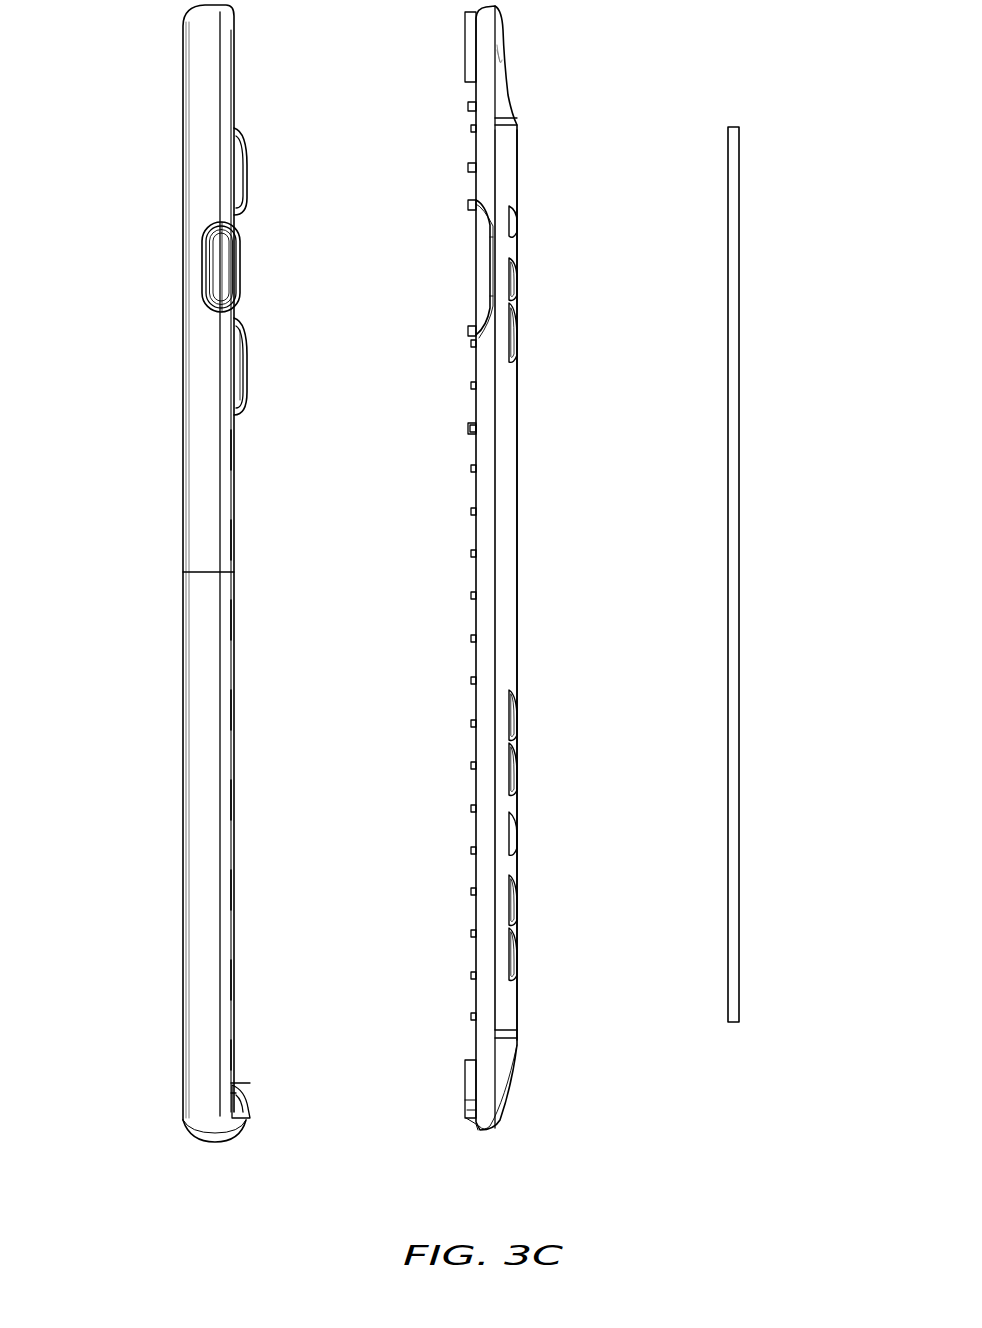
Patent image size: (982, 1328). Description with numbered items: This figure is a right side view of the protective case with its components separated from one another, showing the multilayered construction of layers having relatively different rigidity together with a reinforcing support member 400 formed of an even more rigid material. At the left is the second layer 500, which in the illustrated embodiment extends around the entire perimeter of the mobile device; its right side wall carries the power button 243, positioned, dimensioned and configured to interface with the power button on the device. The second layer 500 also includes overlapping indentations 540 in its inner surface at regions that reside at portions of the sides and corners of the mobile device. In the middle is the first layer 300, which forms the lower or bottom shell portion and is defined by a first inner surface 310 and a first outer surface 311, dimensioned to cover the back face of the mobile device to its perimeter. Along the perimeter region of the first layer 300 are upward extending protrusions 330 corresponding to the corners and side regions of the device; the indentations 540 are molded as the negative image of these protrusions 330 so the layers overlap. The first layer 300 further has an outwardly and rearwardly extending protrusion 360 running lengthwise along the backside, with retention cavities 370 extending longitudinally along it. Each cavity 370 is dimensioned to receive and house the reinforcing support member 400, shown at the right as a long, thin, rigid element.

The second layer 500 is at (203, 89).
The overlapping indentations 540 is at (234, 190).
The power button 243 is at (224, 270).
The first layer 300 is at (510, 147).
The upward extending protrusions 330 is at (485, 40).
The first inner surface 310 is at (476, 531).
The first outer surface 311 is at (517, 457).
The outwardly extending protrusions 360 is at (505, 588).
The retention cavities 370 is at (516, 309).
The reinforcing support member 400 is at (739, 233).